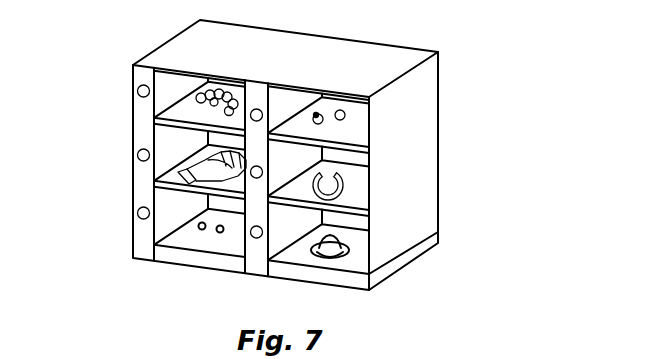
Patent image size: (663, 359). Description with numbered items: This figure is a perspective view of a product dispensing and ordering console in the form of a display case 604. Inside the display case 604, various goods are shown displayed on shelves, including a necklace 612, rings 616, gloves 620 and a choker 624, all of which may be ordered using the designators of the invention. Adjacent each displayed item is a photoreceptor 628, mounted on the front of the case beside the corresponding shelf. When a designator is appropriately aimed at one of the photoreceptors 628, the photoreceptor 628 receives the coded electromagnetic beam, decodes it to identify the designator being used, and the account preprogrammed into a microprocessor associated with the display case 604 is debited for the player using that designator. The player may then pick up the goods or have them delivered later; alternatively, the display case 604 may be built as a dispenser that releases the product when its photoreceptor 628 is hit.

The display case 604 is at (460, 73).
The necklace 612 is at (166, 109).
The rings 616 is at (323, 122).
The gloves 620 is at (156, 181).
The choker 624 is at (352, 180).
The photoreceptor 628 is at (137, 213).